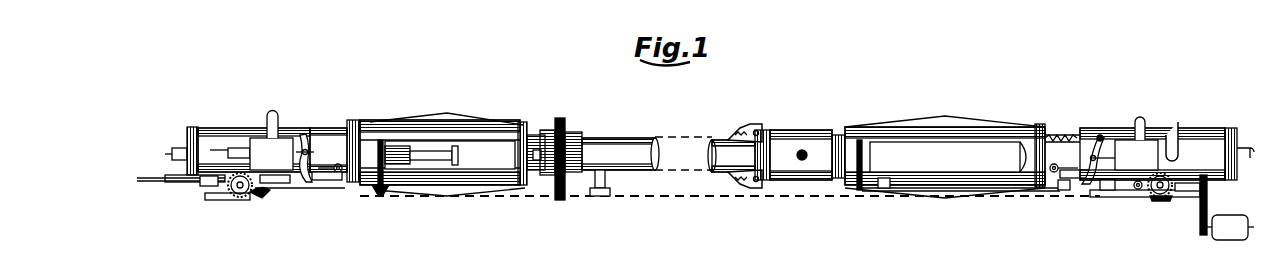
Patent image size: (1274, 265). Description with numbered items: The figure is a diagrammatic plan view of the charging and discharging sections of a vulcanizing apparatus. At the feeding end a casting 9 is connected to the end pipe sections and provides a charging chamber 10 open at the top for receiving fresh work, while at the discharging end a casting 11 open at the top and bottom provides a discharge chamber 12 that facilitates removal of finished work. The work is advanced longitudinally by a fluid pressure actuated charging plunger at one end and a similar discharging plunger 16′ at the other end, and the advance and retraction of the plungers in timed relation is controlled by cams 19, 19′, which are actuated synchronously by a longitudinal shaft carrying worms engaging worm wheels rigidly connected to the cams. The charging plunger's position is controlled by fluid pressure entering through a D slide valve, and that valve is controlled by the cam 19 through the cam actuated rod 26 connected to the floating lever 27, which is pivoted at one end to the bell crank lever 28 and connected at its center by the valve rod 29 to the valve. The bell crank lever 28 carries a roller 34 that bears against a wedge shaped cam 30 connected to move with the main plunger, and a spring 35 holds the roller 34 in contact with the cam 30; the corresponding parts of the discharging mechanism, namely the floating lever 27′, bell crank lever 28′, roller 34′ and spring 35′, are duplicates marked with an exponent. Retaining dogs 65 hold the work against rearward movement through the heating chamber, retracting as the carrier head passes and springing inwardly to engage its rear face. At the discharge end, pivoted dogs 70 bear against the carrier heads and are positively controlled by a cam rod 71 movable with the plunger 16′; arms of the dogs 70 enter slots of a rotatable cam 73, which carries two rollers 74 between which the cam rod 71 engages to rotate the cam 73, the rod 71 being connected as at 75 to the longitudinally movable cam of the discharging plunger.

The casting 9 is at (980, 136).
The charging chamber 10 is at (892, 142).
The casting 11 is at (430, 126).
The discharge chamber 12 is at (493, 146).
The discharging plunger 16′ is at (395, 150).
The cam 19 is at (1155, 197).
The cam 19′ is at (238, 195).
The cam actuated rod 26 is at (1122, 188).
The floating lever 27 is at (1098, 144).
The floating lever 27′ is at (303, 135).
The bell crank lever 28 is at (1062, 170).
The bell crank lever 28′ is at (322, 182).
The valve rod 29 is at (1105, 158).
The wedge shaped cam 30 is at (1054, 194).
The roller 34 is at (1054, 164).
The roller 34′ is at (339, 160).
The spring 35 is at (1052, 135).
The spring 35′ is at (352, 122).
The retaining dogs 65 is at (745, 130).
The pivoted dogs 70 is at (547, 130).
The cam rod 71 is at (497, 198).
The rotatable cam 73 is at (565, 126).
The rollers 74 is at (570, 198).
The connection 75 is at (380, 196).